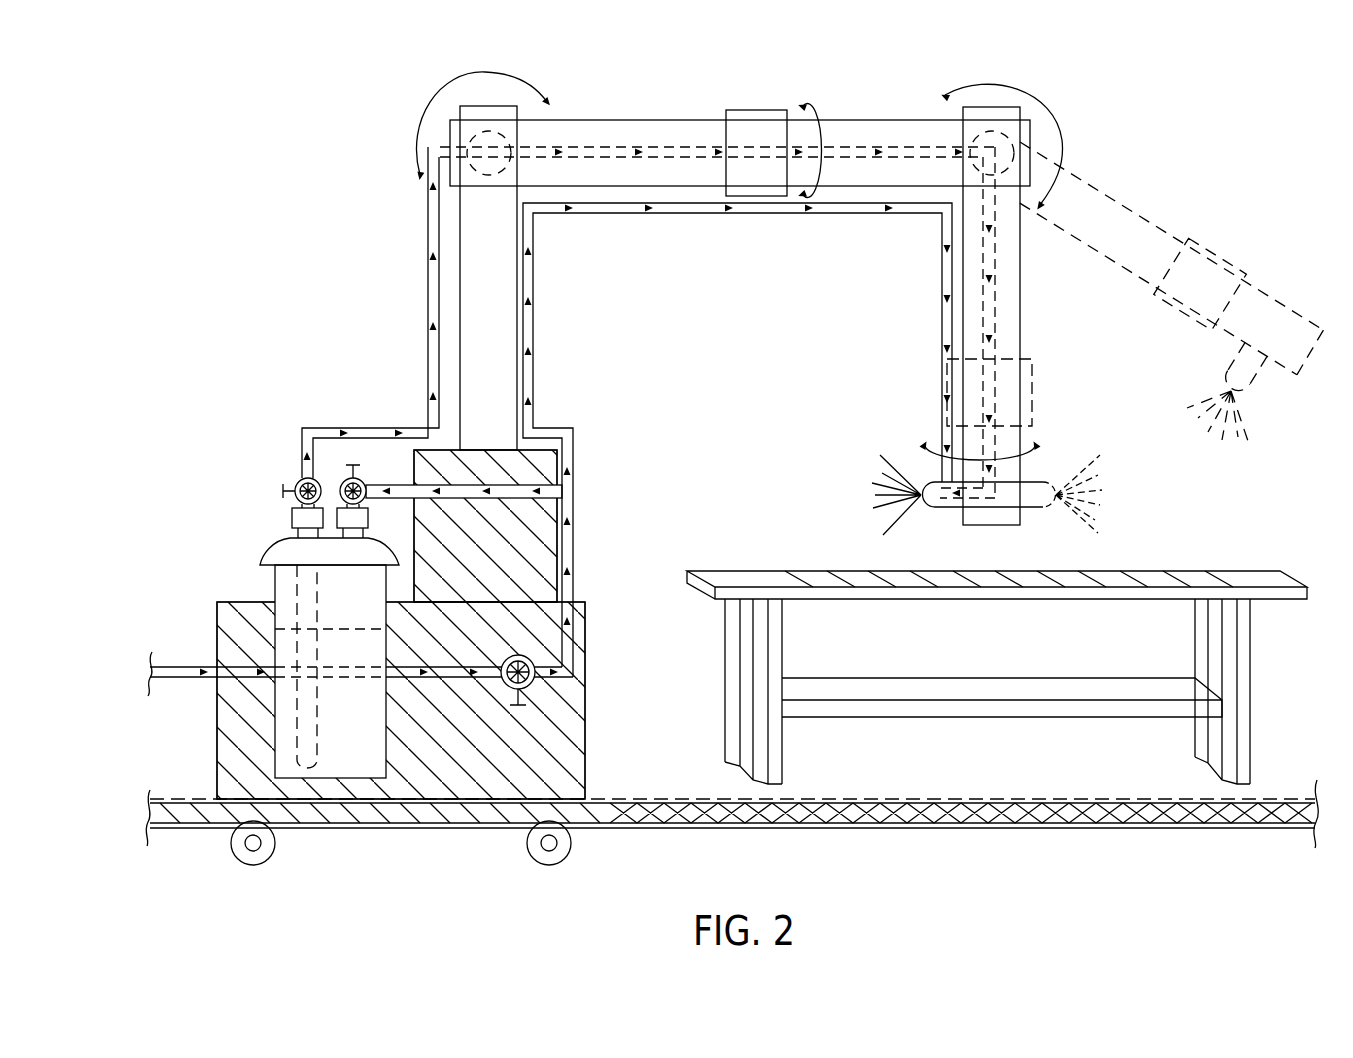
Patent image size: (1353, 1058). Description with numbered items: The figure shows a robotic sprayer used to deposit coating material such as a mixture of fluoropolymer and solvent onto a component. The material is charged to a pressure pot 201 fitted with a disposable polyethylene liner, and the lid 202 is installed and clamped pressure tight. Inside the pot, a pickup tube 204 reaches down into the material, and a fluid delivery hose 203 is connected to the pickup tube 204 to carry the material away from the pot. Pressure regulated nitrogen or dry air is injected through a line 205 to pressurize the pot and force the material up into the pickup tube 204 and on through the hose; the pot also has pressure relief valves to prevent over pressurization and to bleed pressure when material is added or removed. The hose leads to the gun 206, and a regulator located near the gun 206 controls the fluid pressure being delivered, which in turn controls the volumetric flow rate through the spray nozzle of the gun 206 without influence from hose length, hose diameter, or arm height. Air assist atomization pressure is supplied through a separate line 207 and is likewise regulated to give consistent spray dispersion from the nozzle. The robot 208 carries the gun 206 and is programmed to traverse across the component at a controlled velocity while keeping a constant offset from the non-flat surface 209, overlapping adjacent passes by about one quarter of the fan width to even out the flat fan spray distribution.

The pressure pot 201 is at (393, 760).
The lid 202 is at (270, 556).
The fluid delivery hose 203 is at (323, 428).
The pickup tube 204 is at (330, 762).
The line 205 is at (455, 485).
The gun 206 is at (1052, 480).
The line 207 is at (667, 213).
The robot 208 is at (1050, 100).
The non-flat surface 209 is at (1165, 572).